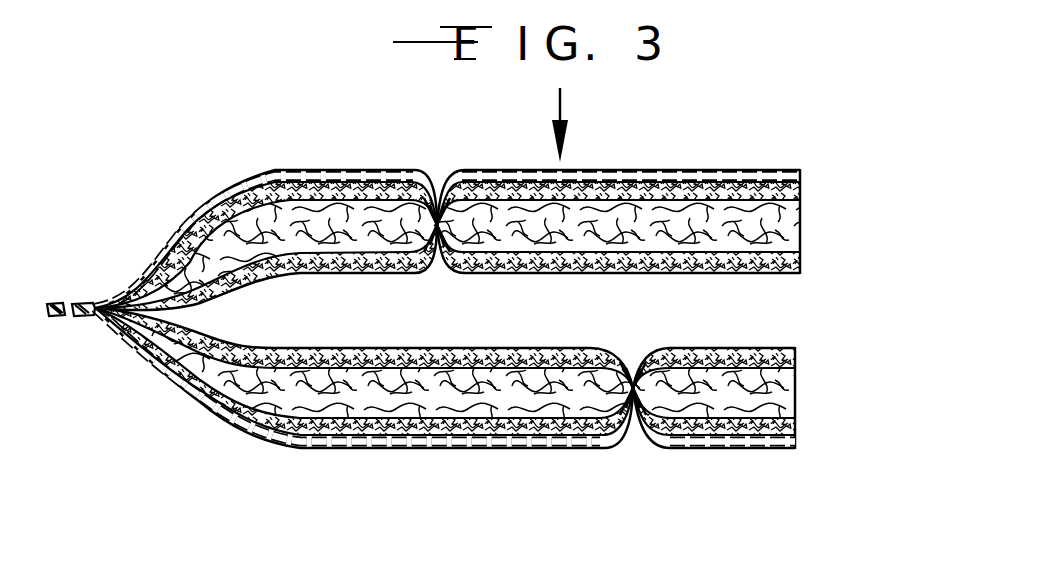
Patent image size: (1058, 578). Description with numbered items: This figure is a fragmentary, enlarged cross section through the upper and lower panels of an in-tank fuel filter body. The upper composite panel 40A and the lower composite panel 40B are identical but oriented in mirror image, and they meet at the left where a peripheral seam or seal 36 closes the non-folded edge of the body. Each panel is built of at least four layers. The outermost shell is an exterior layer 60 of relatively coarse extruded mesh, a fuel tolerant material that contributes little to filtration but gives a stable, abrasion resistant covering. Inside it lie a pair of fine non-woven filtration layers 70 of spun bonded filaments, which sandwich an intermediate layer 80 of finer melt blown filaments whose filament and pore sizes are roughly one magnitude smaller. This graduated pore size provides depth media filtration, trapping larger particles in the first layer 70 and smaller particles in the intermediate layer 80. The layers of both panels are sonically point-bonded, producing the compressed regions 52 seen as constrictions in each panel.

The peripheral seam or seal 36 is at (78, 297).
The upper composite panel 40A is at (630, 150).
The lower composite panel 40B is at (243, 463).
The compressed regions 52 is at (438, 215).
The exterior layer 60 is at (799, 172).
The fine non-woven filtration layers 70 is at (803, 190).
The intermediate layer 80 is at (803, 230).